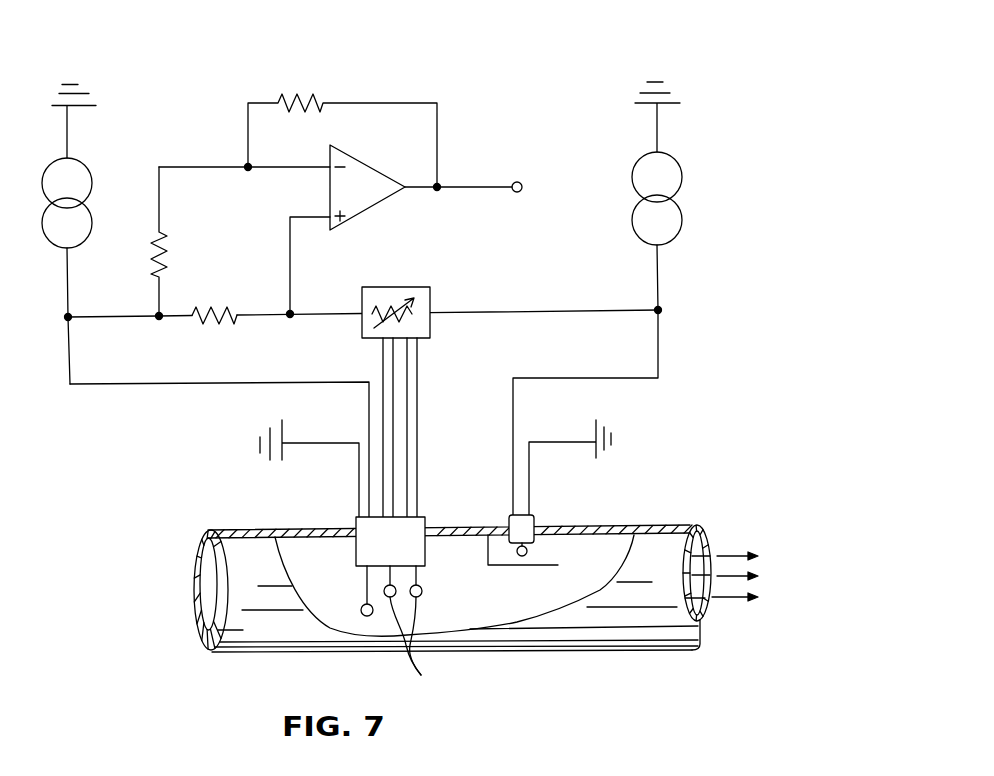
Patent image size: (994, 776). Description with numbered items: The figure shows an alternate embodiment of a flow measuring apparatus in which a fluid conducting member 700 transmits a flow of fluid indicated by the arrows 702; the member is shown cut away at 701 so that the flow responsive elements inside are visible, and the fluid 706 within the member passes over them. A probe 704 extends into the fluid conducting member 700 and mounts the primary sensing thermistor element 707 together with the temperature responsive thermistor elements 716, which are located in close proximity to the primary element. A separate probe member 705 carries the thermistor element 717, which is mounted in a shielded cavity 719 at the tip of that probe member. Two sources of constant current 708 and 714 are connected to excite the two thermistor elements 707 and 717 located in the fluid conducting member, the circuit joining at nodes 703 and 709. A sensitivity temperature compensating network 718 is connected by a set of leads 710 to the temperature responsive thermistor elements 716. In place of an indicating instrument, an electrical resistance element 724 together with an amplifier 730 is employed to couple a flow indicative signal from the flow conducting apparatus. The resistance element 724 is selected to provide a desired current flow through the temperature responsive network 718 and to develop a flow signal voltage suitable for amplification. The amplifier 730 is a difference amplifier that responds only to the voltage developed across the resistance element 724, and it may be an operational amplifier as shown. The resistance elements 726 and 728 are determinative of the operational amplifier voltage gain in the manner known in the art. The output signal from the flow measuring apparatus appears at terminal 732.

The fluid conducting member 700 is at (652, 648).
The cutaway 701 is at (553, 615).
The arrows 702 is at (728, 557).
The circuit node 703 is at (69, 316).
The probe 704 is at (356, 517).
The probe member 705 is at (536, 516).
The fluid 706 is at (518, 612).
The thermistor element 707 is at (357, 613).
The source of constant current 708 is at (90, 173).
The circuit node 709 is at (658, 311).
The set of leads 710 is at (357, 374).
The source of constant current 714 is at (678, 168).
The thermistor elements 716 is at (435, 643).
The thermistor element 717 is at (527, 553).
The temperature responsive network 718 is at (412, 287).
The shielded cavity 719 is at (512, 566).
The electrical resistance element 724 is at (194, 312).
The resistance element 726 is at (170, 236).
The resistance element 728 is at (313, 95).
The amplifier 730 is at (388, 198).
The terminal 732 is at (530, 162).